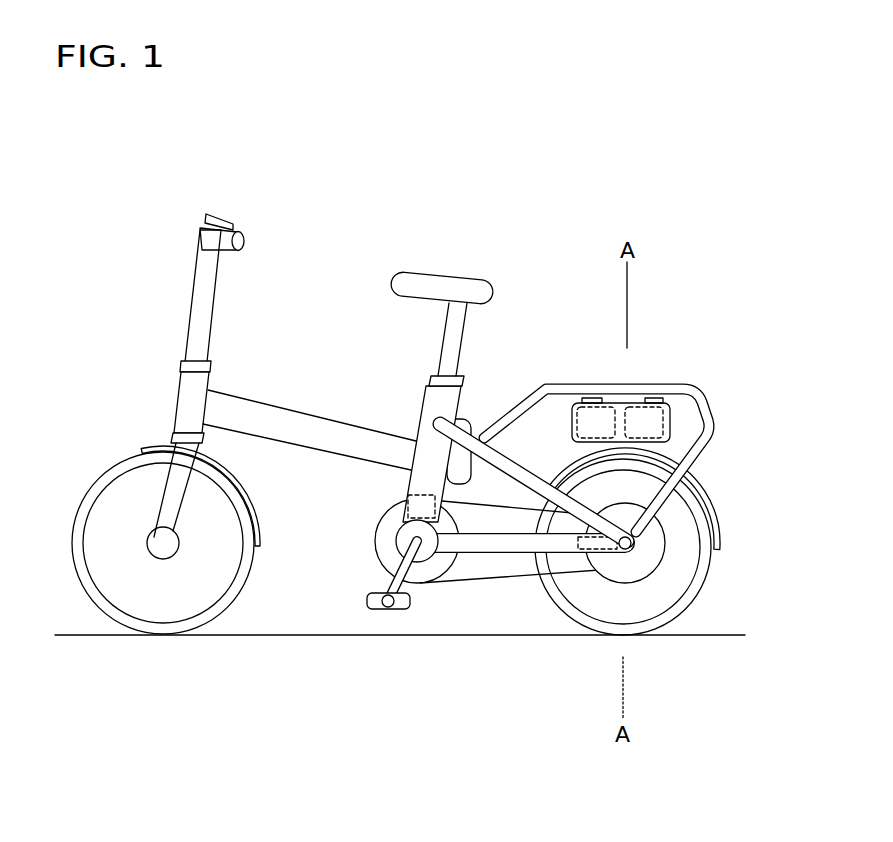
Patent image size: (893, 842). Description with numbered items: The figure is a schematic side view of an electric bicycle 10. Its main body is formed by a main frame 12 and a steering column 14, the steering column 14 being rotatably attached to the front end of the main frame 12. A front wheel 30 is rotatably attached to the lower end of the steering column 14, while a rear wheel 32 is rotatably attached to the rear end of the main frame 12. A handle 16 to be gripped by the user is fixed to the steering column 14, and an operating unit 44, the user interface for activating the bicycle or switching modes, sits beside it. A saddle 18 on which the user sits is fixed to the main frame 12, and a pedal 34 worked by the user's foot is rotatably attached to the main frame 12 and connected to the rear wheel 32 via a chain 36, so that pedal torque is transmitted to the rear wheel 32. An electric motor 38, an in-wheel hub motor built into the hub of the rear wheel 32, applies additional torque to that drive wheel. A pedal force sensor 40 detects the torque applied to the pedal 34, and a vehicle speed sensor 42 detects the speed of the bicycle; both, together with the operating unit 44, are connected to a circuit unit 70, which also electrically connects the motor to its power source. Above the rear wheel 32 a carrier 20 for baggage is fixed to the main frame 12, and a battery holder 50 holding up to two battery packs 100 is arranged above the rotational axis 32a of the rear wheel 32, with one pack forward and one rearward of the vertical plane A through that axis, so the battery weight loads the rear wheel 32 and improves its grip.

The electric bicycle 10 is at (625, 194).
The main frame 12 is at (300, 412).
The steering column 14 is at (196, 300).
The handle 16 is at (246, 241).
The saddle 18 is at (441, 278).
The carrier 20 is at (632, 385).
The front wheel 30 is at (240, 597).
The rear wheel 32 is at (707, 590).
The rotational axis 32a is at (637, 546).
The pedal 34 is at (373, 609).
The chain 36 is at (478, 583).
The electric motor 38 is at (637, 574).
The pedal force sensor 40 is at (408, 499).
The vehicle speed sensor 42 is at (603, 550).
The operating unit 44 is at (226, 214).
The battery holder 50 is at (696, 410).
The circuit unit 70 is at (468, 483).
The battery pack 100 is at (598, 403).